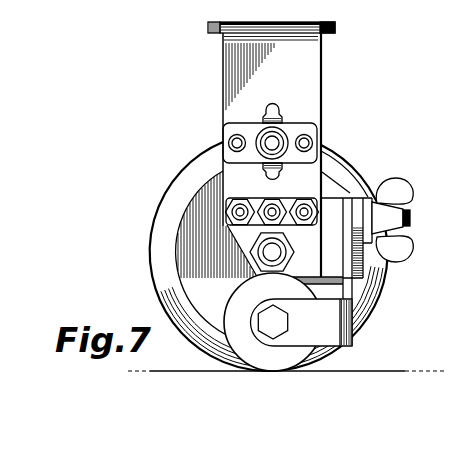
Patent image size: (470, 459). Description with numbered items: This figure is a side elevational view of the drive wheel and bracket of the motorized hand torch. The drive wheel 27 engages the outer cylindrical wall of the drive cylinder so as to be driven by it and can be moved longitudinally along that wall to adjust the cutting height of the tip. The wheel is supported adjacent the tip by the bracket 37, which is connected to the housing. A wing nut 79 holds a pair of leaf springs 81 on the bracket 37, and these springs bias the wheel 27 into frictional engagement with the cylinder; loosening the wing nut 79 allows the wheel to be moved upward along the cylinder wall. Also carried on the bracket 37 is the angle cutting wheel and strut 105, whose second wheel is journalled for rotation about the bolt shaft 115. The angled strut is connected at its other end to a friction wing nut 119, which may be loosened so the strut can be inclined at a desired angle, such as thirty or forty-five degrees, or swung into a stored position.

The drive wheel 27 is at (174, 225).
The bracket 37 is at (229, 63).
The wing nut 79 is at (272, 100).
The leaf springs 81 is at (252, 183).
The angle cutting wheel and strut 105 is at (356, 286).
The bolt shaft 115 is at (249, 298).
The friction wing nut 119 is at (399, 183).